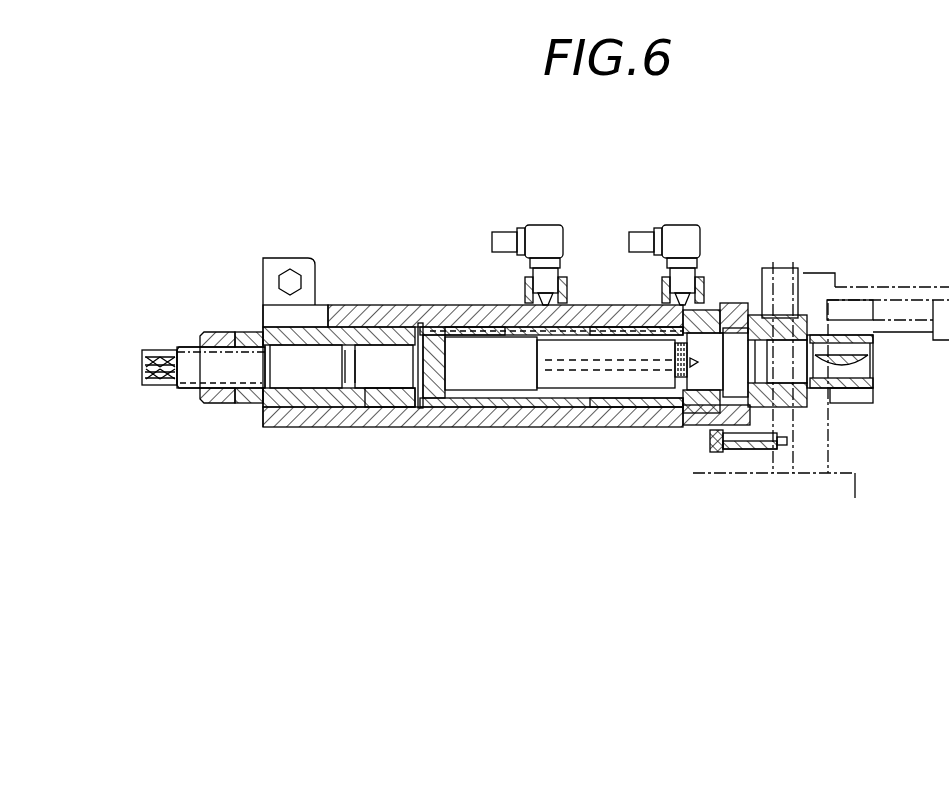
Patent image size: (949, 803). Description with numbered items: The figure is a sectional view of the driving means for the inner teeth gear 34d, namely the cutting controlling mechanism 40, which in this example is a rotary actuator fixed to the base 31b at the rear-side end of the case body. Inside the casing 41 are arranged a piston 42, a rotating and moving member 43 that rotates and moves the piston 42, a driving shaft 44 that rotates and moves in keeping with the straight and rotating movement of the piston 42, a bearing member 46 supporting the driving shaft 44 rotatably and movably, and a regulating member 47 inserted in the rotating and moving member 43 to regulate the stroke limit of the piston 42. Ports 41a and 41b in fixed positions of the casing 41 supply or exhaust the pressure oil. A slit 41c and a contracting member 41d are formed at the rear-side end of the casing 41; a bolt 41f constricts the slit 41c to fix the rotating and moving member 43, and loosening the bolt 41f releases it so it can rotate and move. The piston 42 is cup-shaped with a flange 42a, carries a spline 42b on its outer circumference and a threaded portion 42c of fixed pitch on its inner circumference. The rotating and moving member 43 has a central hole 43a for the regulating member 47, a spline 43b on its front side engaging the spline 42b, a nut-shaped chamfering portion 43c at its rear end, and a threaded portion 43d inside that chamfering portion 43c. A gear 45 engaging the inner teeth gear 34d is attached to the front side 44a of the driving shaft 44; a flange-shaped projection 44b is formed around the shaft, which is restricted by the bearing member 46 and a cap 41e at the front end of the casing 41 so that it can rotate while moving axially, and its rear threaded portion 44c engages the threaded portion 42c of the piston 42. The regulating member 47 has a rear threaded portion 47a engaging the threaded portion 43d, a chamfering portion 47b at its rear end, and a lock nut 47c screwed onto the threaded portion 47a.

The base 31b is at (785, 266).
The inner teeth gear 34d is at (910, 300).
The cutting controlling mechanism 40 is at (518, 428).
The casing 41 is at (372, 428).
The port 41a is at (685, 225).
The port 41b is at (548, 225).
The slit 41c is at (265, 317).
The contracting member 41d is at (298, 263).
The cap 41e is at (793, 330).
The bolt 41f is at (280, 274).
The piston 42 is at (445, 373).
The flange 42a is at (598, 345).
The spline 42b is at (505, 345).
The threaded portion 42c is at (565, 342).
The rotating and moving member 43 is at (333, 345).
The hole 43a is at (388, 375).
The spline 43b is at (476, 365).
The chamfering portion 43c is at (248, 403).
The threaded portion 43d is at (270, 367).
The driving shaft 44 is at (793, 365).
The front side of driving shaft 44a is at (862, 362).
The projection 44b is at (735, 345).
The threaded portion 44c is at (608, 392).
The gear 45 is at (850, 396).
The bearing member 46 is at (712, 405).
The regulating member 47 is at (190, 375).
The threaded portion 47a is at (190, 347).
The chamfering portion 47b is at (150, 380).
The lock nut 47c is at (215, 403).